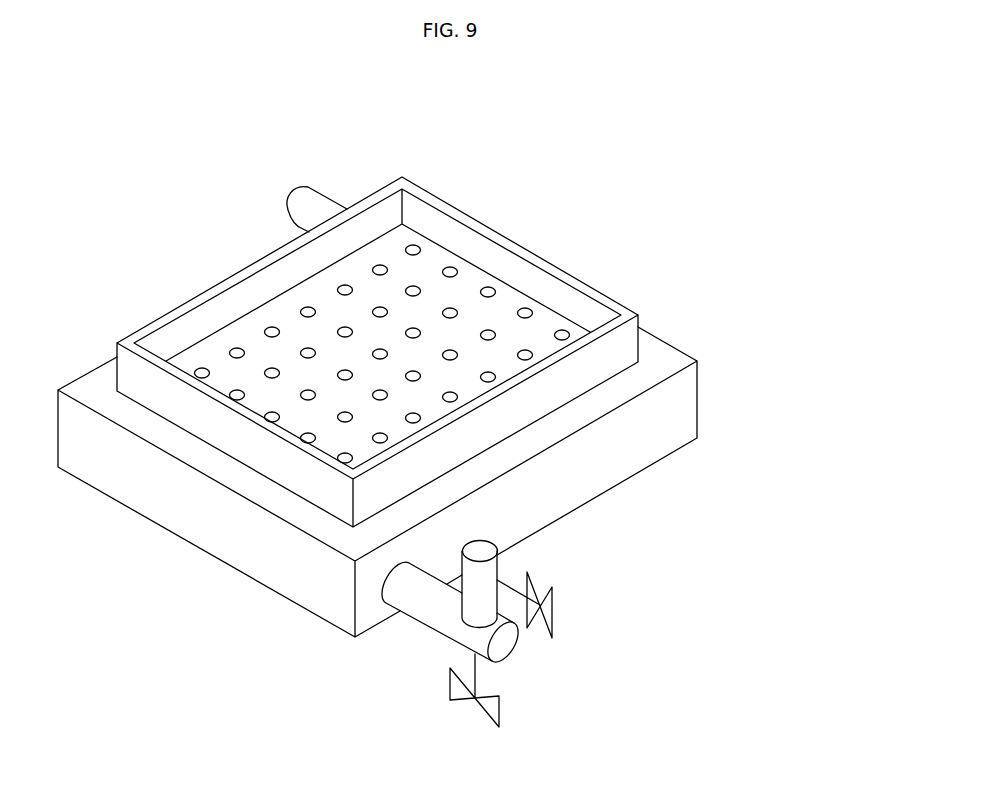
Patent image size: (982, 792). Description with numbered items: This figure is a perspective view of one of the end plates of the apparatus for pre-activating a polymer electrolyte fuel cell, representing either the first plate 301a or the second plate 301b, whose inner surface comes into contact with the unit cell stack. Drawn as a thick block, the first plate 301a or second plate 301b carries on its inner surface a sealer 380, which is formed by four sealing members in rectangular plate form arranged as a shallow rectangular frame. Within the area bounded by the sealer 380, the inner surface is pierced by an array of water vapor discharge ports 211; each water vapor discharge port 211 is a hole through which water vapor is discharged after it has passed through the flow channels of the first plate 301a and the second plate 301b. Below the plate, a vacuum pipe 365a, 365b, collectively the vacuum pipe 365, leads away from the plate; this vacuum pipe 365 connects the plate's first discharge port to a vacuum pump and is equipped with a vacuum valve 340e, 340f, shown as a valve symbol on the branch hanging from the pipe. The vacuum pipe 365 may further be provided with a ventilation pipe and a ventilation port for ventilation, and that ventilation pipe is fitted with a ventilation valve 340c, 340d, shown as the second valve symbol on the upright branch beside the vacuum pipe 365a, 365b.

The sealer 380 is at (472, 246).
The water vapor discharge port 211 is at (524, 312).
The first plate 301a is at (454, 469).
The second plate 301b is at (677, 412).
The vacuum pipe 365a is at (363, 650).
The vacuum pipe 365b is at (423, 635).
The vacuum pipe 365 is at (363, 650).
The ventilation valve 340c is at (624, 605).
The ventilation valve 340d is at (551, 621).
The vacuum valve 340e is at (577, 692).
The vacuum valve 340f is at (498, 710).